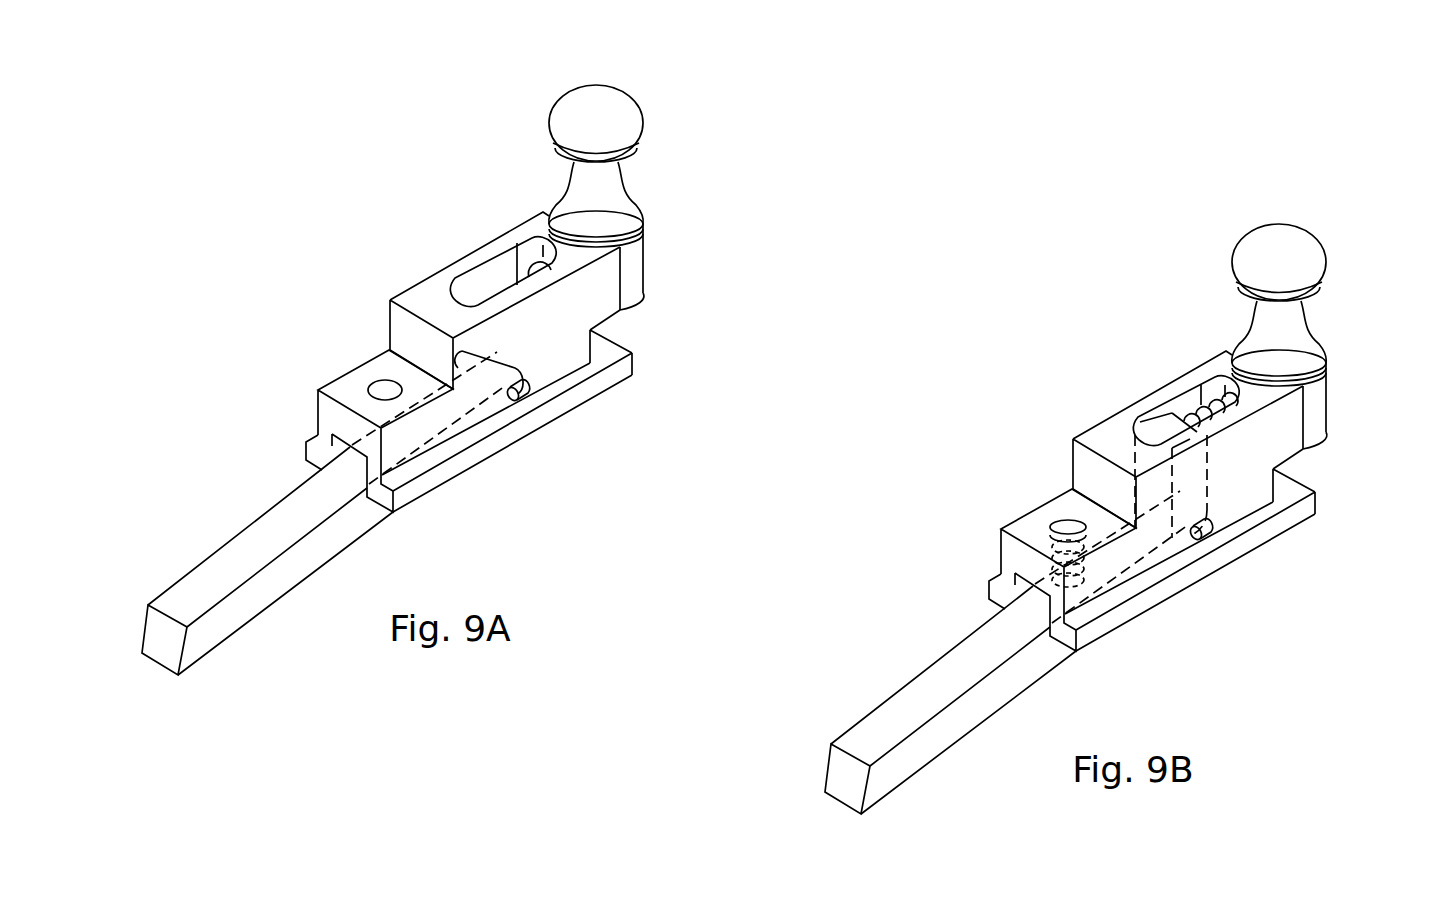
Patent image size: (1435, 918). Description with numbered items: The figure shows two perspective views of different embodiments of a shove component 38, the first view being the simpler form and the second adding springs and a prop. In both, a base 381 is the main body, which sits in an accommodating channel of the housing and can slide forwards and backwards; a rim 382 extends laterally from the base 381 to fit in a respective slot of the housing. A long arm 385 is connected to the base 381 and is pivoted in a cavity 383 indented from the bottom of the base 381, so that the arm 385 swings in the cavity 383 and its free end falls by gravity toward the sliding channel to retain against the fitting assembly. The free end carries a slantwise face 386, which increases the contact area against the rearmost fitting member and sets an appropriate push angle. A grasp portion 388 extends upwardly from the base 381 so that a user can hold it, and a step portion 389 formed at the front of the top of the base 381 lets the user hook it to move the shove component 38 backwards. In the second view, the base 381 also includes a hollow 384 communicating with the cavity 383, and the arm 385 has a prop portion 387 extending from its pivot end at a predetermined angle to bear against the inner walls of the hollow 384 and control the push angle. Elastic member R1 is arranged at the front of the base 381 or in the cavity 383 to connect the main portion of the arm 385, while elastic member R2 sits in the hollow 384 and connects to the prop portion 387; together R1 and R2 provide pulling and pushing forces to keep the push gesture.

In FIG. 9A, the shove component 38 is at (441, 150).
In FIG. 9B, the shove component 38 is at (1109, 537).
In FIG. 9A, the base 381 is at (323, 415).
In FIG. 9B, the base 381 is at (1038, 543).
In FIG. 9A, the rim 382 is at (303, 450).
In FIG. 9B, the rim 382 is at (1080, 560).
In FIG. 9A, the cavity 383 is at (322, 468).
In FIG. 9B, the cavity 383 is at (962, 612).
In FIG. 9B, the hollow 384 is at (1193, 402).
In FIG. 9A, the arm 385 is at (280, 577).
In FIG. 9B, the arm 385 is at (953, 703).
In FIG. 9A, the slantwise face 386 is at (167, 647).
In FIG. 9B, the slantwise face 386 is at (827, 822).
In FIG. 9B, the prop portion 387 is at (1167, 433).
In FIG. 9A, the grasp portion 388 is at (607, 177).
In FIG. 9B, the grasp portion 388 is at (1333, 336).
In FIG. 9A, the step portion 389 is at (400, 328).
In FIG. 9B, the step portion 389 is at (1141, 446).
In FIG. 9B, the elastic member R1 is at (1063, 527).
In FIG. 9B, the elastic member R2 is at (1237, 390).